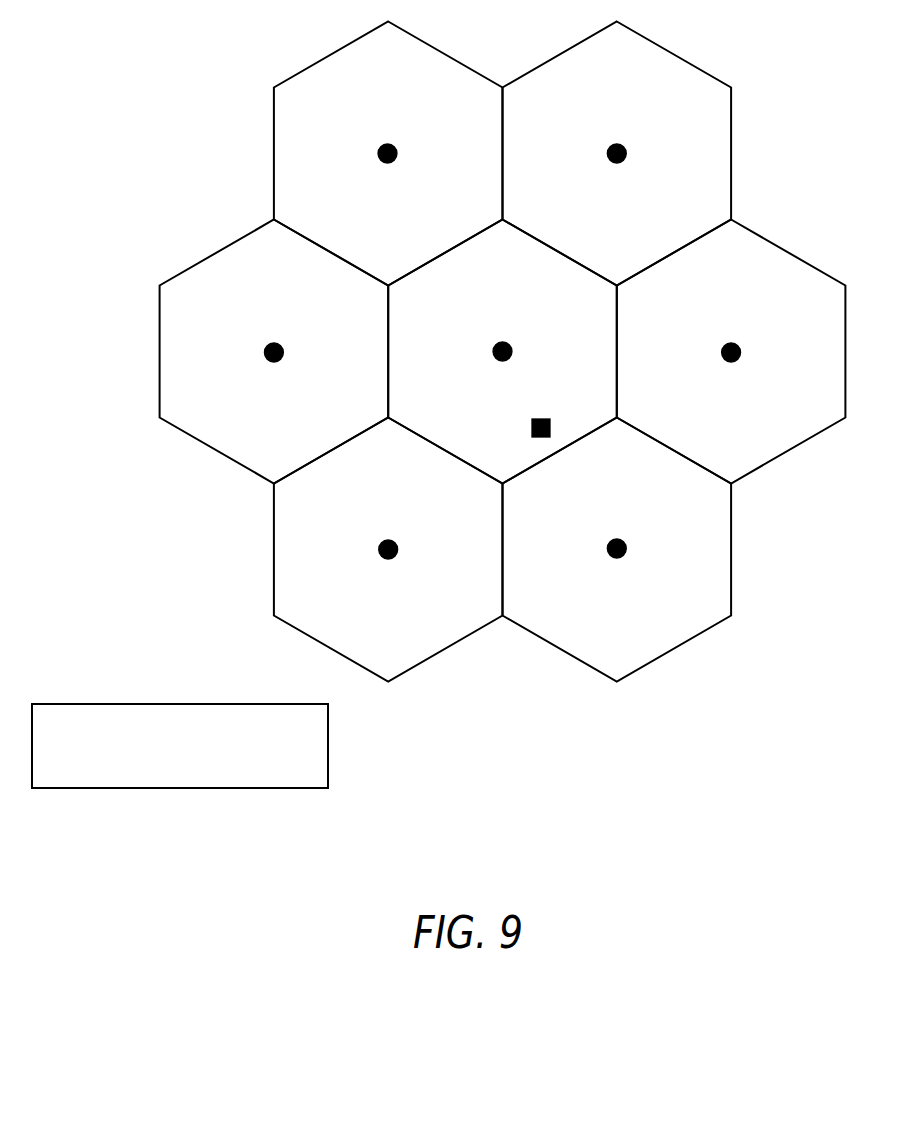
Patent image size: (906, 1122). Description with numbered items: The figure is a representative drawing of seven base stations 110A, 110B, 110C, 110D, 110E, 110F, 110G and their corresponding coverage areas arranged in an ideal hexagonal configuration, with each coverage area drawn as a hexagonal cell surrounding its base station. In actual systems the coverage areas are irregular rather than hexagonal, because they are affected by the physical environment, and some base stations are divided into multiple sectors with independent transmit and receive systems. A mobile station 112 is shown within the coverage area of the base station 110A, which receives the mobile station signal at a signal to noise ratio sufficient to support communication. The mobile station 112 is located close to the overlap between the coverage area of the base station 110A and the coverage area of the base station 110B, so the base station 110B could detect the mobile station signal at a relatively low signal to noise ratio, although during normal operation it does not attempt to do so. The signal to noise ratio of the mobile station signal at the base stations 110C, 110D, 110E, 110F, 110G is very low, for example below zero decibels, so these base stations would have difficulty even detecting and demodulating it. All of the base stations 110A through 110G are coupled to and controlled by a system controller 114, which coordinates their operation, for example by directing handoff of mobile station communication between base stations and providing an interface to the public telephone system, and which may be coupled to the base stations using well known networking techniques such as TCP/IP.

The base station 110A is at (509, 344).
The base station 110B is at (623, 541).
The base station 110C is at (395, 542).
The base station 110D is at (281, 345).
The base station 110E is at (394, 146).
The base station 110F is at (623, 146).
The base station 110G is at (738, 345).
The mobile station 112 is at (535, 419).
The system controller 114 is at (248, 788).